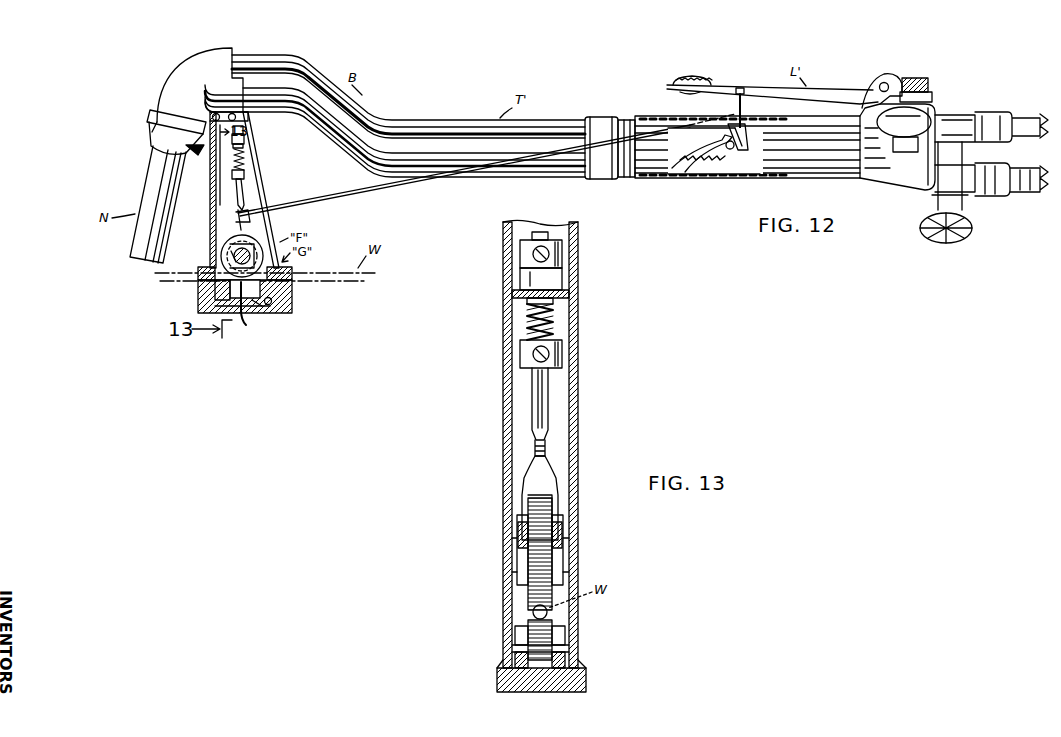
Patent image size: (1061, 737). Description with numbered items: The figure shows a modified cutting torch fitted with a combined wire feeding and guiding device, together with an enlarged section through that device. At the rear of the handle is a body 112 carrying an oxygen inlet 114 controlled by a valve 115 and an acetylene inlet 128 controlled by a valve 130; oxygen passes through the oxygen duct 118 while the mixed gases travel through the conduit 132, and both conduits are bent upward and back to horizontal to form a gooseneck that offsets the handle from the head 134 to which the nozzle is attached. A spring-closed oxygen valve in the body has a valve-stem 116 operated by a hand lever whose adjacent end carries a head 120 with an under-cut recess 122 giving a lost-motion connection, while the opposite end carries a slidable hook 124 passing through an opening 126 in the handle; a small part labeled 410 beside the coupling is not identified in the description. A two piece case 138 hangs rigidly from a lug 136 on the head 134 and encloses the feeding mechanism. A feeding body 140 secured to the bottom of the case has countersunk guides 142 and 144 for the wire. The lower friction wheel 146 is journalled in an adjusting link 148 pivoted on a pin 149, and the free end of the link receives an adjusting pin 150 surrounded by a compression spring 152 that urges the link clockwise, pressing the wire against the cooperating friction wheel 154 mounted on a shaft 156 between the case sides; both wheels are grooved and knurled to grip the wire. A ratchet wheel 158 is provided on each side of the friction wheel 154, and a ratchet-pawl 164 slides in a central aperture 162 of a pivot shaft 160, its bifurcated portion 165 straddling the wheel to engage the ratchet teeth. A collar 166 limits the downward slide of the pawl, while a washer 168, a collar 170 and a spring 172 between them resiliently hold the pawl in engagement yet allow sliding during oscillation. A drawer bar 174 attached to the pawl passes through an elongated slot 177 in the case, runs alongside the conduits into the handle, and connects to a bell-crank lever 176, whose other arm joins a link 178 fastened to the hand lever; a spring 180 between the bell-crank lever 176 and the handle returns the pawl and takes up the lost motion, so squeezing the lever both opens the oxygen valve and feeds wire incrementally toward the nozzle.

In FIG. 12, the body 112 is at (914, 176).
In FIG. 12, the oxygen inlet 114 is at (1022, 120).
In FIG. 12, the valve 115 is at (932, 118).
In FIG. 12, the valve-stem 116 is at (932, 94).
In FIG. 12, the oxygen duct 118 is at (454, 120).
In FIG. 12, the head 120 is at (894, 76).
In FIG. 12, the under-cut recess 122 is at (928, 82).
In FIG. 12, the slidable hook 124 is at (704, 76).
In FIG. 12, the opening 126 is at (690, 116).
In FIG. 12, the acetylene inlet 128 is at (1034, 176).
In FIG. 12, the valve 130 is at (972, 230).
In FIG. 12, the conduit 132 is at (562, 176).
In FIG. 12, the head 134 is at (170, 79).
In FIG. 12, the lug 136 is at (248, 118).
In FIG. 12, the two piece case 138 is at (210, 192).
In FIG. 13, the two piece case 138 is at (578, 421).
In FIG. 12, the feeding body 140 is at (278, 313).
In FIG. 13, the feeding body 140 is at (505, 682).
In FIG. 12, the guide 142 is at (292, 288).
In FIG. 12, the guide 144 is at (198, 280).
In FIG. 12, the lower friction wheel 146 is at (272, 302).
In FIG. 13, the lower friction wheel 146 is at (552, 618).
In FIG. 12, the adjusting link 148 is at (248, 326).
In FIG. 13, the adjusting link 148 is at (565, 636).
In FIG. 12, the pin 149 is at (262, 306).
In FIG. 12, the adjusting pin 150 is at (200, 312).
In FIG. 12, the compression spring 152 is at (200, 300).
In FIG. 12, the friction wheel 154 is at (260, 238).
In FIG. 13, the friction wheel 154 is at (553, 514).
In FIG. 12, the shaft 156 is at (250, 238).
In FIG. 13, the shaft 156 is at (563, 552).
In FIG. 12, the ratchet wheel 158 is at (234, 256).
In FIG. 13, the ratchet wheel 158 is at (518, 535).
In FIG. 12, the pivot shaft 160 is at (248, 147).
In FIG. 13, the pivot shaft 160 is at (562, 278).
In FIG. 13, the central aperture 162 is at (574, 292).
In FIG. 12, the ratchet-pawl 164 is at (250, 178).
In FIG. 13, the ratchet-pawl 164 is at (548, 392).
In FIG. 12, the bifurcated portion 165 is at (232, 238).
In FIG. 13, the bifurcated portion 165 is at (552, 489).
In FIG. 12, the collar 166 is at (250, 134).
In FIG. 13, the collar 166 is at (562, 254).
In FIG. 12, the washer 168 is at (250, 158).
In FIG. 13, the washer 168 is at (568, 300).
In FIG. 12, the collar 170 is at (230, 175).
In FIG. 13, the collar 170 is at (562, 352).
In FIG. 12, the spring 172 is at (232, 158).
In FIG. 13, the spring 172 is at (528, 320).
In FIG. 12, the drawer bar 174 is at (368, 185).
In FIG. 12, the bell-crank lever 176 is at (736, 176).
In FIG. 12, the elongated slot 177 is at (280, 190).
In FIG. 12, the link 178 is at (743, 108).
In FIG. 12, the spring 180 is at (696, 176).
In FIG. 12, the ring 410 is at (628, 180).